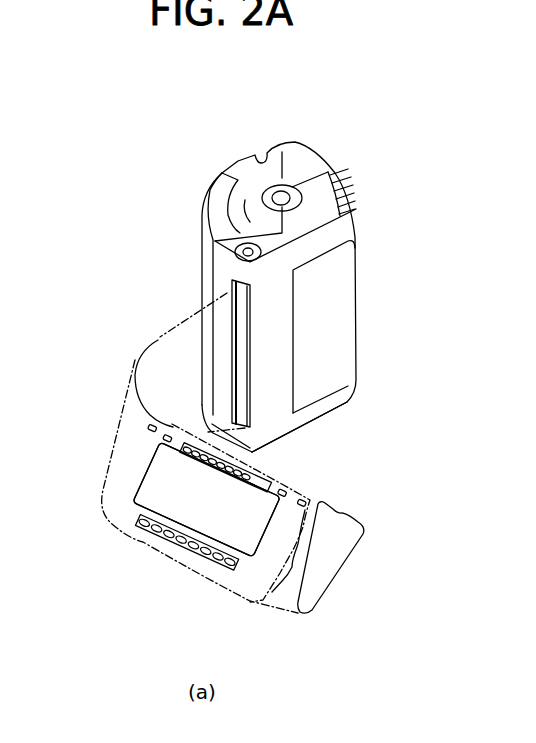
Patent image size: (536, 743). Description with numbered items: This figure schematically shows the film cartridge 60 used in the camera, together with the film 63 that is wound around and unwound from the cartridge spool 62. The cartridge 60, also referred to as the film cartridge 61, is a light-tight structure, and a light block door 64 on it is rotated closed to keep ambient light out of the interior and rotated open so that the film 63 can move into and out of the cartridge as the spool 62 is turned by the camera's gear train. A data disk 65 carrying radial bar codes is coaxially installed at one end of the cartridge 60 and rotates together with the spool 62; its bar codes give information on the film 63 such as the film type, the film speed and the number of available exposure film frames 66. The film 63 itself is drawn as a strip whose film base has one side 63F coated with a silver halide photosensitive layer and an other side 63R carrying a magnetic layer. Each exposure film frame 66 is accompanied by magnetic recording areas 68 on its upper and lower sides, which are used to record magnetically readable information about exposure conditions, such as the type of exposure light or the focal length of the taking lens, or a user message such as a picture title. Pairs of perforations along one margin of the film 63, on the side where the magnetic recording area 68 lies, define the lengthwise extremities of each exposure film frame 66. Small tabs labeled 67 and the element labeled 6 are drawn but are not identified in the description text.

The film cartridge 60 is at (250, 147).
The film cartridge 61 is at (356, 389).
The spool 62 is at (303, 187).
The film 63 is at (135, 360).
The other side of the film 63R is at (183, 347).
The one side of the film 63F is at (135, 460).
The light block door 64 is at (252, 398).
The data disk 65 is at (356, 200).
The exposure film frame 66 is at (153, 540).
The positioning tabs 67 is at (173, 418).
The magnetic recording area 68 is at (252, 472).
The image sensor 6 is at (183, 497).